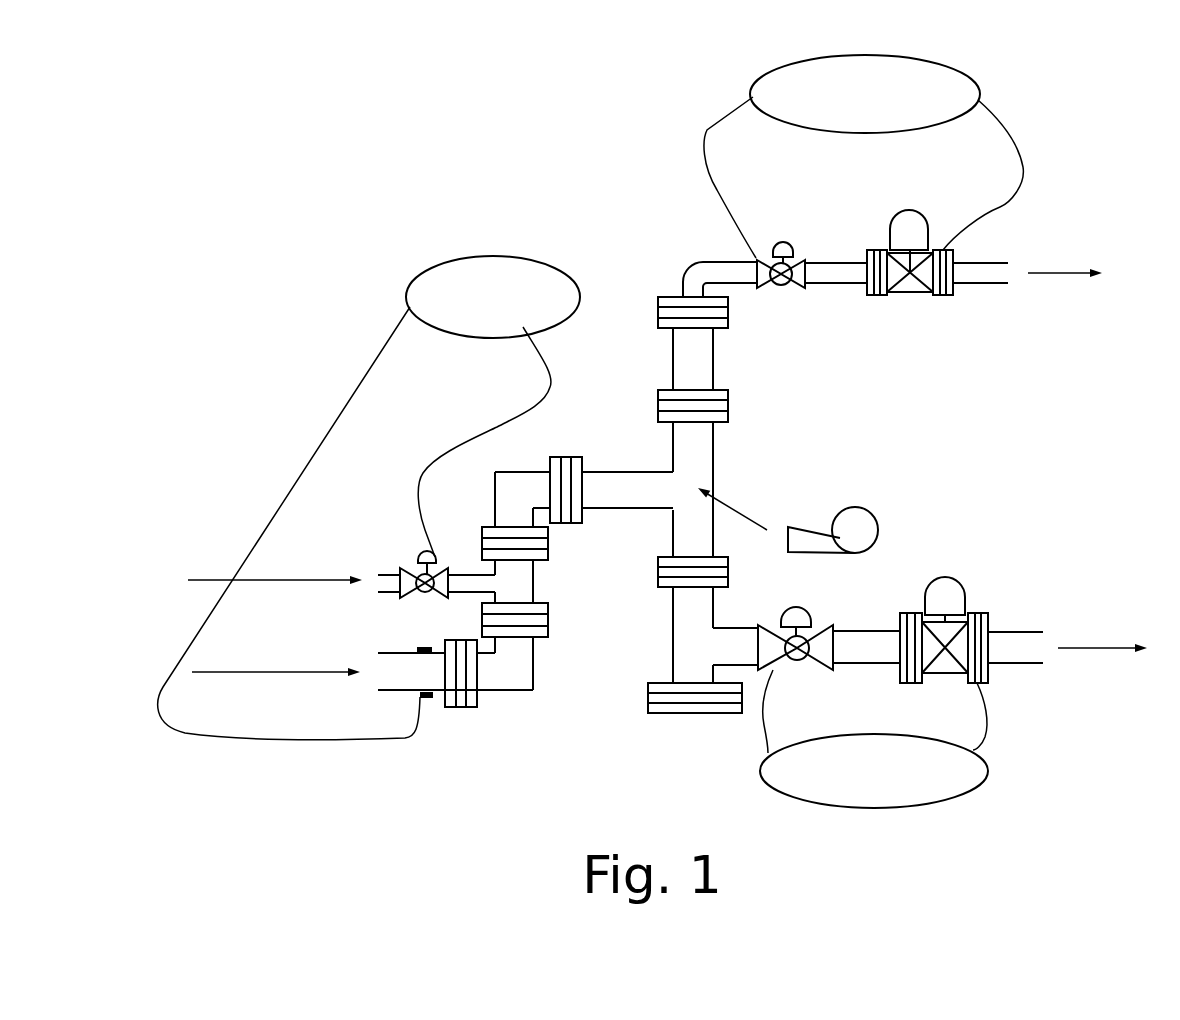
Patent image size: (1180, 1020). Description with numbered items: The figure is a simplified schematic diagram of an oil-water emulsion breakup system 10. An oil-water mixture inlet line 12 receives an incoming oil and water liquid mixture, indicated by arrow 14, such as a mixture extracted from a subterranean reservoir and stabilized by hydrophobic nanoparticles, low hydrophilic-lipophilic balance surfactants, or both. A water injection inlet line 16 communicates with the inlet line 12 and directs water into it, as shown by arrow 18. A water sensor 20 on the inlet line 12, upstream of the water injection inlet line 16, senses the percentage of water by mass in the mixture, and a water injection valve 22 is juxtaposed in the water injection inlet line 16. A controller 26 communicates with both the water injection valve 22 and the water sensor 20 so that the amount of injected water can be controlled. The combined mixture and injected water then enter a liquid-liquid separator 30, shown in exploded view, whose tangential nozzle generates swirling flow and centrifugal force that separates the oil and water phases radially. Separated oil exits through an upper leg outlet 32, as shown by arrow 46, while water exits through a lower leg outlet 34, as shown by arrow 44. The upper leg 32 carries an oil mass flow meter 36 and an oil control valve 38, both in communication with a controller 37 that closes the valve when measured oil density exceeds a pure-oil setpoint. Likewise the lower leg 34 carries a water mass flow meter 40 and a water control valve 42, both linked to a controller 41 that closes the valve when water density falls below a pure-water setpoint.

The oil-water emulsion breakup system 10 is at (1046, 171).
The oil-water mixture inlet line 12 is at (492, 673).
The arrow 14 is at (265, 673).
The water injection inlet line 16 is at (470, 583).
The arrow 18 is at (275, 582).
The water sensor 20 is at (425, 698).
The water injection valve 22 is at (410, 572).
The controller 26 is at (493, 257).
The liquid-liquid separator 30 is at (855, 525).
The upper leg outlet 32 is at (700, 362).
The lower leg outlet 34 is at (683, 647).
The oil mass flow meter 36 is at (780, 243).
The controller 37 is at (933, 62).
The oil control valve 38 is at (908, 228).
The water mass flow meter 40 is at (815, 653).
The controller 41 is at (930, 807).
The water control valve 42 is at (987, 680).
The arrow 44 is at (1093, 645).
The arrow 46 is at (1058, 275).